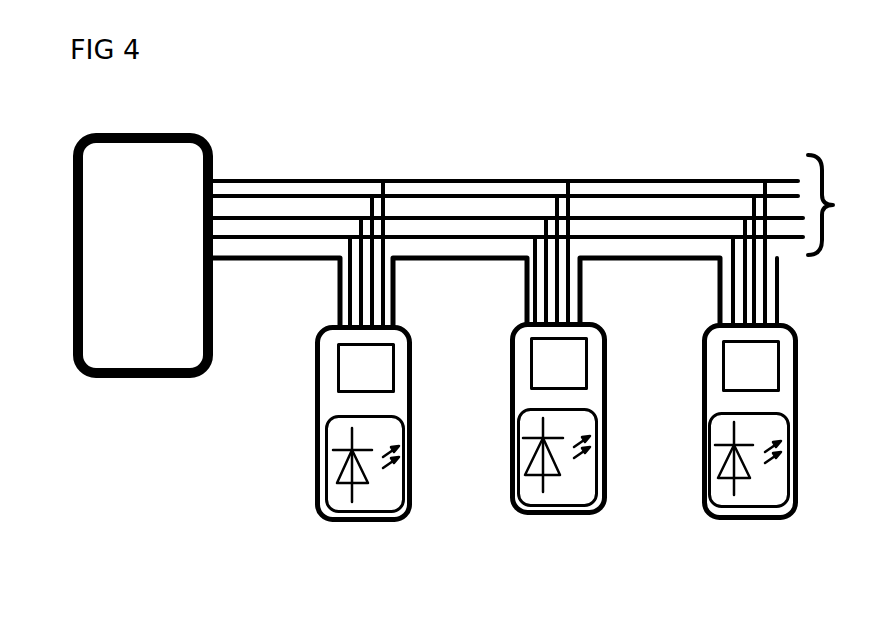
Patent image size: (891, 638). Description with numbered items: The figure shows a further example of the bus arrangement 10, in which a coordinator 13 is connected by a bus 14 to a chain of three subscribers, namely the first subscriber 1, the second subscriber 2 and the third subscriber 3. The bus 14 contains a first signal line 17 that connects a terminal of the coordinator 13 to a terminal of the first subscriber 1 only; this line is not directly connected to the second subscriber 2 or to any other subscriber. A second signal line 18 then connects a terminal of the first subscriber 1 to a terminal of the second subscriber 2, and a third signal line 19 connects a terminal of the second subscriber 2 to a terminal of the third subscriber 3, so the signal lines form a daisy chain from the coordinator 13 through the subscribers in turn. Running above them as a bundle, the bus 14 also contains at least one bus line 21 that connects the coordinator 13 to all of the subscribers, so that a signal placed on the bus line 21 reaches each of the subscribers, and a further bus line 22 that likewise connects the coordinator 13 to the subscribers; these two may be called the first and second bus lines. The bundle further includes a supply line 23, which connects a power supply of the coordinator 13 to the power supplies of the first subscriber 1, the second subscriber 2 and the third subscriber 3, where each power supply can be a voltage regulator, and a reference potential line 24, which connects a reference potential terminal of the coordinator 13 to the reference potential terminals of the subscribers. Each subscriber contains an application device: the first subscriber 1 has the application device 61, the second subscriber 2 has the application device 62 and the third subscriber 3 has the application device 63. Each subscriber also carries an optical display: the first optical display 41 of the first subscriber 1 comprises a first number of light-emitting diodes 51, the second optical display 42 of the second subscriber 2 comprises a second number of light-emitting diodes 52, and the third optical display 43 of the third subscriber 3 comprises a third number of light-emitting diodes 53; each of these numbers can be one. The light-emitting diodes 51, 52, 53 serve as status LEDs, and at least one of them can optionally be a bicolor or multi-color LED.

The bus arrangement 10 is at (580, 135).
The coordinator 13 is at (143, 284).
The bus 14 is at (544, 188).
The bus line 21 is at (508, 179).
The further bus line 22 is at (508, 170).
The supply line 23 is at (505, 159).
The reference potential line 24 is at (505, 151).
The first signal line 17 is at (276, 292).
The second signal line 18 is at (460, 294).
The third signal line 19 is at (650, 291).
The first subscriber 1 is at (354, 445).
The second subscriber 2 is at (550, 439).
The third subscriber 3 is at (742, 442).
The application device 61 is at (332, 368).
The application device 62 is at (527, 364).
The application device 63 is at (719, 366).
The first optical display 41 is at (354, 489).
The second optical display 42 is at (550, 482).
The third optical display 43 is at (742, 486).
The light-emitting diodes 51 is at (395, 494).
The light-emitting diodes 52 is at (585, 485).
The light-emitting diodes 53 is at (779, 489).